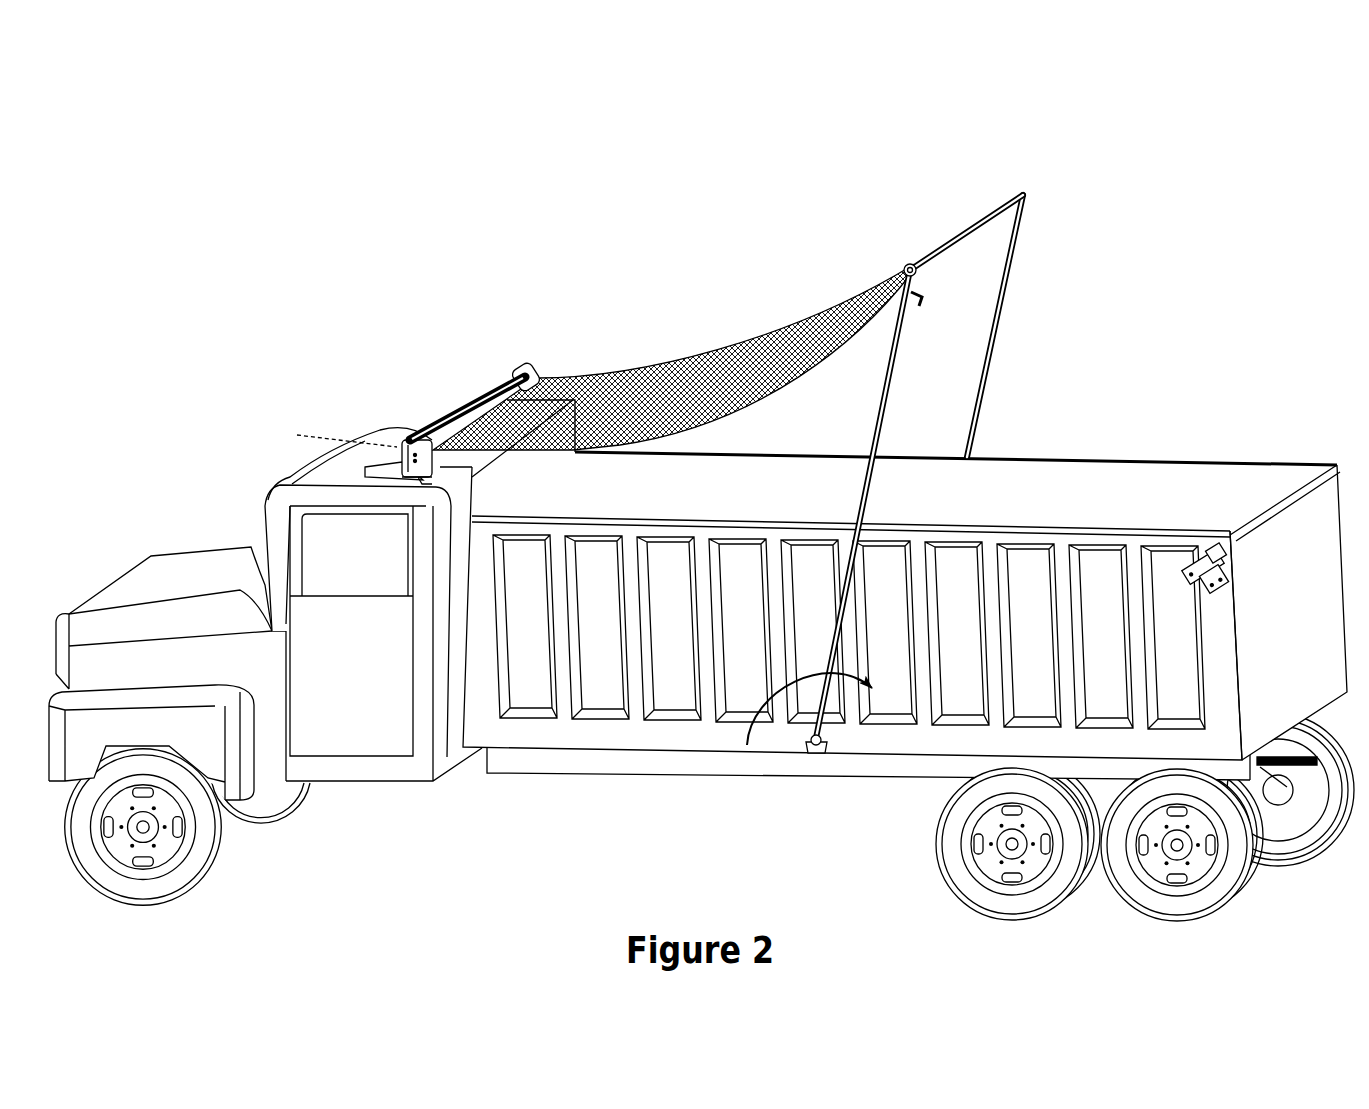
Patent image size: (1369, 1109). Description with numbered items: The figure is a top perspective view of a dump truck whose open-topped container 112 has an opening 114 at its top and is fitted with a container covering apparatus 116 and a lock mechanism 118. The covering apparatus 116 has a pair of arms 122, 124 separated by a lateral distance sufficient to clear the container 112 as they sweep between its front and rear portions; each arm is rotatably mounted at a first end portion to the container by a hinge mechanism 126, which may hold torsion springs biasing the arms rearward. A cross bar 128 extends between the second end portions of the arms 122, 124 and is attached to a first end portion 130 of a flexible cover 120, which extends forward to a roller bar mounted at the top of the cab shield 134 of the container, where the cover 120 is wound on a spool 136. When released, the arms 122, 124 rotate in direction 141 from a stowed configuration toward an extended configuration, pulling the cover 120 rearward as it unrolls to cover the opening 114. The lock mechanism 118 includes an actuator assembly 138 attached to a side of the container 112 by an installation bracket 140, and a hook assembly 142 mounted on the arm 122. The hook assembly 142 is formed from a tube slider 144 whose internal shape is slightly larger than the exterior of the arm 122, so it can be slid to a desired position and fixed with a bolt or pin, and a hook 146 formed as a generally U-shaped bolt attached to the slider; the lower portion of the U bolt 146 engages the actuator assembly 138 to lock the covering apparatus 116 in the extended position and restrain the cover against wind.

The container 112 is at (1080, 387).
The opening 114 is at (1137, 495).
The container covering apparatus 116 is at (660, 272).
The lock mechanism 118 is at (1207, 600).
The flexible cover 120 is at (680, 380).
The arm 122 is at (872, 440).
The arm 124 is at (1003, 320).
The hinge mechanism 126 is at (807, 747).
The cross bar 128 is at (498, 382).
The first end portion 130 is at (940, 195).
The cab shield 134 is at (375, 460).
The spool 136 is at (412, 437).
The actuator assembly 138 is at (1238, 543).
The installation bracket 140 is at (1223, 580).
The direction 141 is at (740, 707).
The hook assembly 142 is at (933, 283).
The tube slider 144 is at (903, 300).
The hook 146 is at (920, 302).